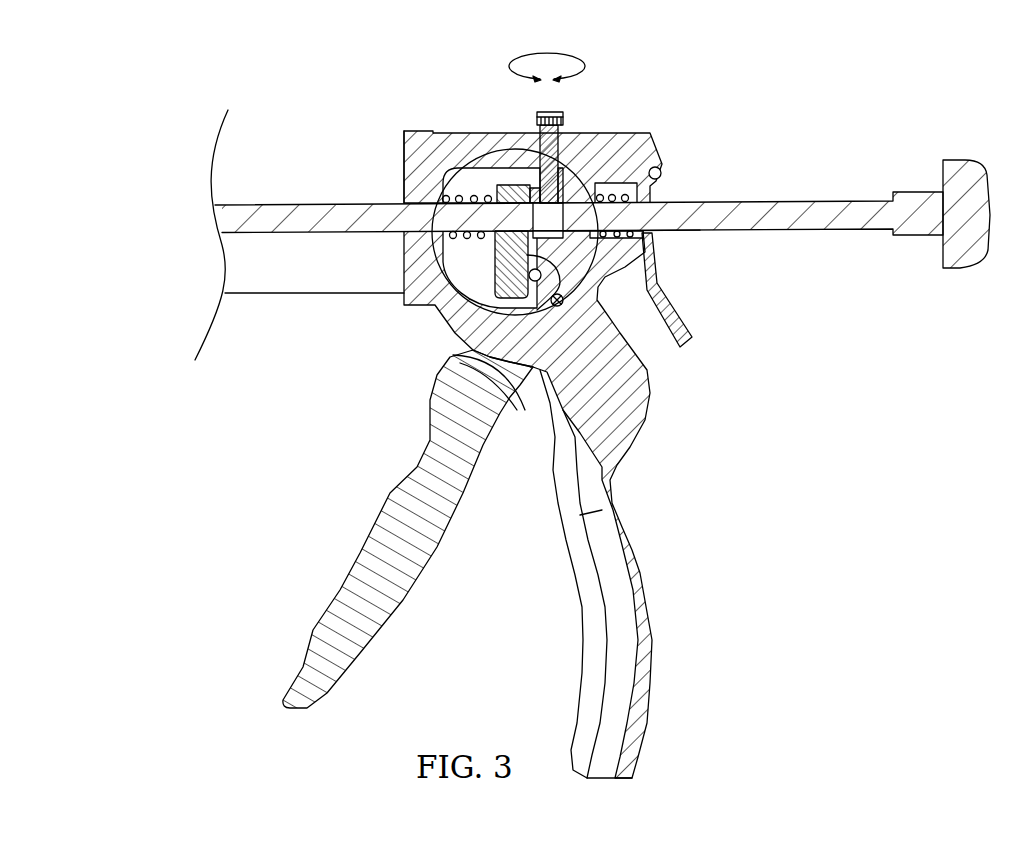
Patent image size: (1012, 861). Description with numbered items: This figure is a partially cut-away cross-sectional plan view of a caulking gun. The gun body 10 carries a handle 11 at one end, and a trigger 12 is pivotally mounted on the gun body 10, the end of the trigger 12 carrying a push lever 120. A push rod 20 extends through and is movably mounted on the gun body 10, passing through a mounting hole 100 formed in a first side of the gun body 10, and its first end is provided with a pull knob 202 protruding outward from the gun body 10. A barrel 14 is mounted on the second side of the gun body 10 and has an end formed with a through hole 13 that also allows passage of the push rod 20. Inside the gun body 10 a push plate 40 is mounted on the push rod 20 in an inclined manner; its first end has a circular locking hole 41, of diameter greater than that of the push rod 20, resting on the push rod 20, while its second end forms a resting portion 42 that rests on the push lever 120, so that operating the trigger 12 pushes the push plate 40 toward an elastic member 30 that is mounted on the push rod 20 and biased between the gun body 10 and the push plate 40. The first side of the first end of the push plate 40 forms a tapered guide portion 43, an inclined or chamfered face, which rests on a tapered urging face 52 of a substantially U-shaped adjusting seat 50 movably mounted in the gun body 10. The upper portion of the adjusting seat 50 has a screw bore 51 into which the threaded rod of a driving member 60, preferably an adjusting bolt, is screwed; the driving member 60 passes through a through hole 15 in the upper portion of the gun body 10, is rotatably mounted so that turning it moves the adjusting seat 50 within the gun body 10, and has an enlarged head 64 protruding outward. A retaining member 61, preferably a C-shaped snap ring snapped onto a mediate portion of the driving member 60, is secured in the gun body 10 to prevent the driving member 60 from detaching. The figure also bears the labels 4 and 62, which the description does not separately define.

The body 4 is at (433, 307).
The gun body 10 is at (654, 652).
The handle 11 is at (588, 555).
The trigger 12 is at (382, 528).
The through hole 13 is at (405, 190).
The barrel 14 is at (250, 294).
The through hole 15 is at (560, 128).
The push rod 20 is at (718, 200).
The pull knob 202 is at (978, 258).
The elastic member 30 is at (445, 158).
The push plate 40 is at (493, 254).
The locking hole 41 is at (457, 190).
The resting portion 42 is at (452, 355).
The tapered guide portion 43 is at (620, 310).
The adjusting seat 50 is at (555, 240).
The screw bore 51 is at (645, 168).
The tapered urging face 52 is at (560, 275).
The driving member 60 is at (556, 102).
The retaining member 61 is at (540, 167).
The spring 62 is at (615, 216).
The enlarged head 64 is at (541, 117).
The mounting hole 100 is at (660, 231).
The push lever 120 is at (536, 282).